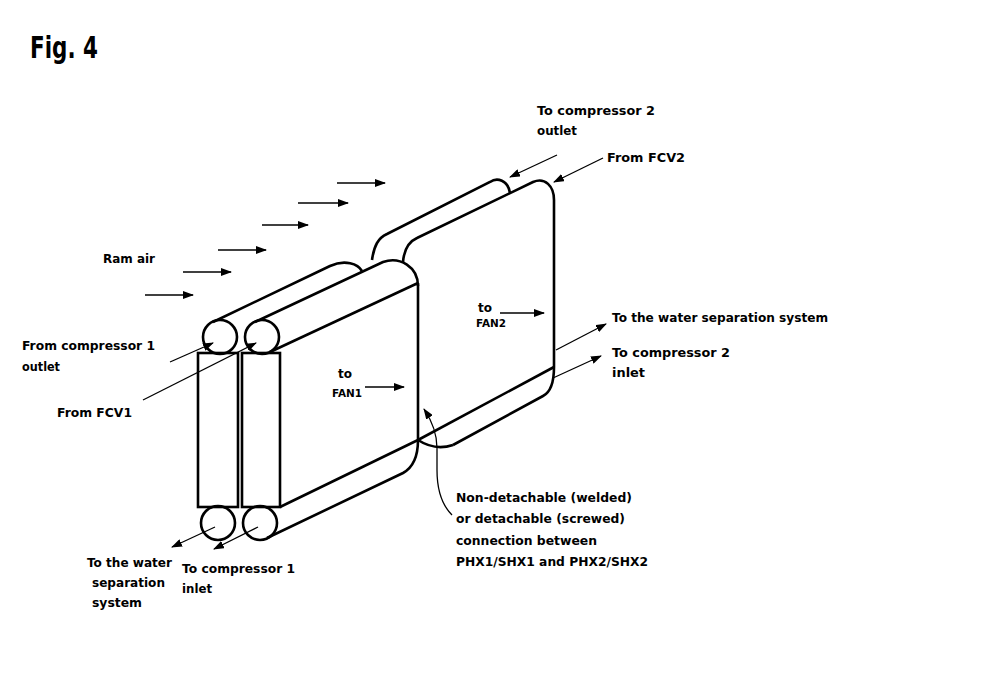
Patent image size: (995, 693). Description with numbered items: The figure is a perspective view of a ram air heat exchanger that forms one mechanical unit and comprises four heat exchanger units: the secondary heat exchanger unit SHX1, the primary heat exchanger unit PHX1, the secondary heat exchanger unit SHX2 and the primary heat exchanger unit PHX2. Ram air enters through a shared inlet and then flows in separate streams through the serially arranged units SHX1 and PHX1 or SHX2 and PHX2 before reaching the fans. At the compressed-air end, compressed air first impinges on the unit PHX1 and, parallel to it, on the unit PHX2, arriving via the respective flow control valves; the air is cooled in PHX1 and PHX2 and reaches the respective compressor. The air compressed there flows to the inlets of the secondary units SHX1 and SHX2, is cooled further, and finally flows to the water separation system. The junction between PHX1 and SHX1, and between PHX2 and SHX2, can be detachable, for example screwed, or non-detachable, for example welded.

The secondary heat exchanger unit SHX1 is at (280, 401).
The primary heat exchanger unit PHX1 is at (330, 400).
The secondary heat exchanger unit SHX2 is at (462, 204).
The primary heat exchanger unit PHX2 is at (540, 248).